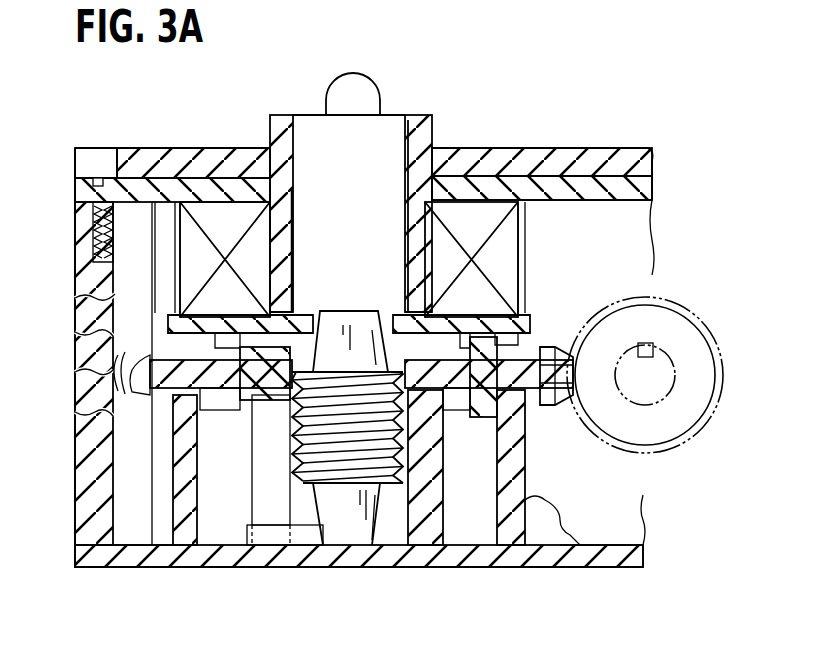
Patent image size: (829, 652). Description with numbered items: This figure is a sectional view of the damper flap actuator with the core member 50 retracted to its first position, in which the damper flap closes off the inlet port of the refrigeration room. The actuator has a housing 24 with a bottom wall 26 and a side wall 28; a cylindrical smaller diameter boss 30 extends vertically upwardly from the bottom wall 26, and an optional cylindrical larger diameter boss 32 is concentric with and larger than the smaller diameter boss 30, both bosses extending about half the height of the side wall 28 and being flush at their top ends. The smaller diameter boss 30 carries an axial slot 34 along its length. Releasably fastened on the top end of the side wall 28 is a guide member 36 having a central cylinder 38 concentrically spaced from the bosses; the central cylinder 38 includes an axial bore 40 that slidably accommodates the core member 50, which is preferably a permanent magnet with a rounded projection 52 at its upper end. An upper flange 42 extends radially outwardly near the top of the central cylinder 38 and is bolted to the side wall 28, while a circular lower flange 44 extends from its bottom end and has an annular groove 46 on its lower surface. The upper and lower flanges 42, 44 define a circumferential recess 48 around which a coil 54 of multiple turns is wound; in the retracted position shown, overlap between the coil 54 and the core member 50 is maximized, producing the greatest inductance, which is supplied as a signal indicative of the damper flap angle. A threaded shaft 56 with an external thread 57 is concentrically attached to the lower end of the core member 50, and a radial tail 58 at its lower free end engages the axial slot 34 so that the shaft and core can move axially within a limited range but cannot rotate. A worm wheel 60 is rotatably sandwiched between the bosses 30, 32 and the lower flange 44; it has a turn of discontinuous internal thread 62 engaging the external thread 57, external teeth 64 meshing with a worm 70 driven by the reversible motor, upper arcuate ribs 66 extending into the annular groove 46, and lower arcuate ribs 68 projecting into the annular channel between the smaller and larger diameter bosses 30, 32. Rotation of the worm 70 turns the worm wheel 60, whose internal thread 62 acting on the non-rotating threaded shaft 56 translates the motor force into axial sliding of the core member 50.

The housing 24 is at (78, 572).
The bottom wall 26 is at (350, 553).
The side wall 28 is at (75, 490).
The smaller diameter boss 30 is at (487, 545).
The larger diameter boss 32 is at (590, 548).
The axial slot 34 is at (258, 497).
The guide member 36 is at (440, 150).
The central cylinder 38 is at (418, 230).
The axial bore 40 is at (312, 183).
The upper flange 42 is at (150, 180).
The lower flange 44 is at (158, 294).
The annular groove 46 is at (393, 352).
The circumferential recess 48 is at (505, 300).
The core member 50 is at (213, 218).
The rounded projection 52 is at (364, 90).
The coil 54 is at (193, 165).
The threaded shaft 56 is at (390, 510).
The external thread 57 is at (290, 445).
The radial tail 58 is at (268, 537).
The worm wheel 60 is at (553, 415).
The internal thread 62 is at (290, 382).
The external teeth 64 is at (150, 372).
The upper arcuate ribs 66 is at (218, 348).
The lower arcuate ribs 68 is at (207, 420).
The worm 70 is at (690, 318).